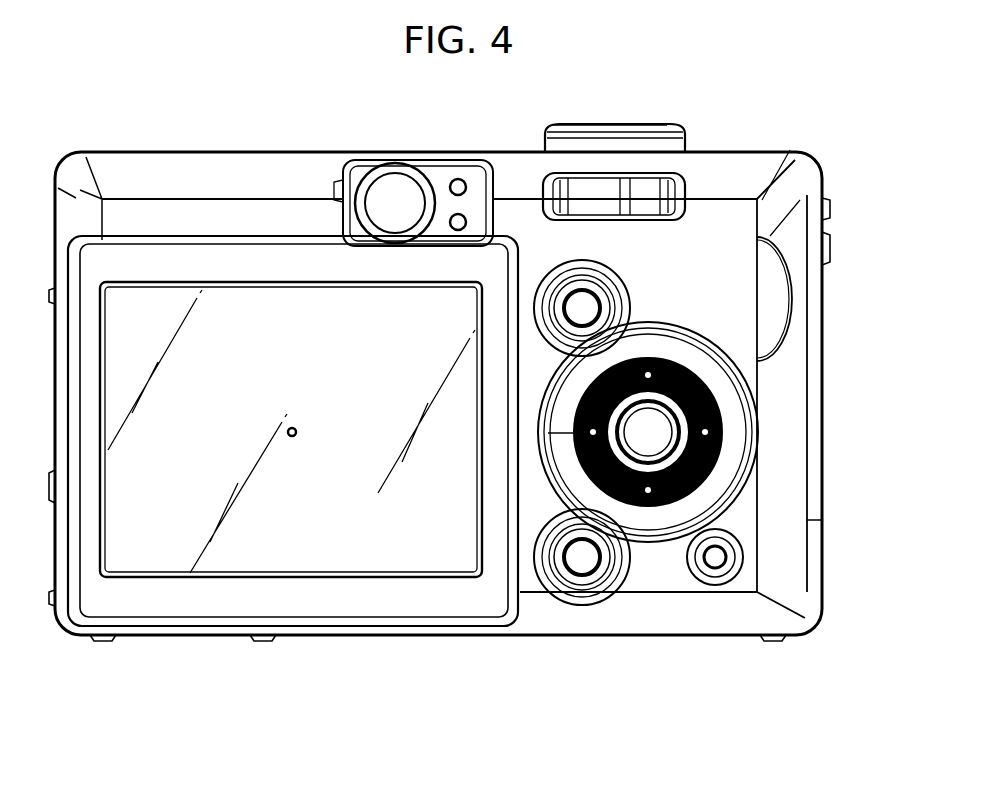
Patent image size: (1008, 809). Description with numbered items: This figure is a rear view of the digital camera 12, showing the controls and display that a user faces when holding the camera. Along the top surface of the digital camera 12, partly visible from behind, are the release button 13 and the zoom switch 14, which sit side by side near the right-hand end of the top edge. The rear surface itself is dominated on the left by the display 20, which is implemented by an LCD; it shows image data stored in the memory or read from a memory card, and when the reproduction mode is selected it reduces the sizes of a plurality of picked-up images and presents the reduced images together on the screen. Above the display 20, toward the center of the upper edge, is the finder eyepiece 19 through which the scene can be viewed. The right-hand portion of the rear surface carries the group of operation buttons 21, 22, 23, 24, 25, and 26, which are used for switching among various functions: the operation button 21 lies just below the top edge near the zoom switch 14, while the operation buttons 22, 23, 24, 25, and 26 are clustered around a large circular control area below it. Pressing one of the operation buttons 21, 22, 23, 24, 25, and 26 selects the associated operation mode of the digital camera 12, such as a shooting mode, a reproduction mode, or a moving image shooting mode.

The digital camera 12 is at (177, 182).
The release button 13 is at (603, 122).
The zoom switch 14 is at (627, 147).
The finder eyepiece 19 is at (403, 200).
The display 20 is at (310, 557).
The operation button 21 is at (673, 177).
The operation button 22 is at (590, 310).
The operation button 23 is at (660, 425).
The operation button 24 is at (578, 560).
The operation button 25 is at (713, 558).
The operation button 26 is at (715, 470).